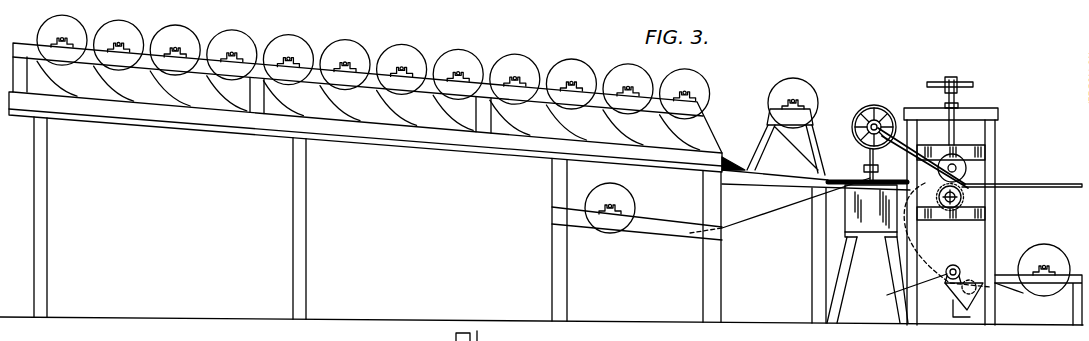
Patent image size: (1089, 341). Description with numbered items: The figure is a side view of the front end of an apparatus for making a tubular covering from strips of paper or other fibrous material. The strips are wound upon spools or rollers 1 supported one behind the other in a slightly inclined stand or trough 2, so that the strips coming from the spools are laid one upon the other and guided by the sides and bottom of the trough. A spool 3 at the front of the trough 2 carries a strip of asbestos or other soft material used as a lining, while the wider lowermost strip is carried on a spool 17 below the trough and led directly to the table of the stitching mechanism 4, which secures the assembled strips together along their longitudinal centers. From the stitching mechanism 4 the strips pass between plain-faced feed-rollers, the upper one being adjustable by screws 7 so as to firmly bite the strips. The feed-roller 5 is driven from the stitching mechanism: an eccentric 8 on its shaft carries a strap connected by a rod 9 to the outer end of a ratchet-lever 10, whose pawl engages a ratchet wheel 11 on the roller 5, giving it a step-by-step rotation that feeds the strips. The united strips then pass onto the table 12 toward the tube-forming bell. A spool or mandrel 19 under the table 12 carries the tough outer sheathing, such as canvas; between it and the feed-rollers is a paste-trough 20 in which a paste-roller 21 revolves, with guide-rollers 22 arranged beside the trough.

The spools or rollers 1 is at (70, 34).
The stand or trough 2 is at (541, 184).
The spool 3 is at (800, 96).
The stitching or sewing mechanism 4 is at (966, 166).
The feed-roller 5 is at (943, 214).
The screws 7 is at (955, 132).
The eccentric 8 is at (878, 118).
The rod 9 is at (882, 142).
The ratchet-lever 10 is at (962, 190).
The ratchet face or wheel 11 is at (947, 213).
The table 12 is at (1061, 188).
The spool or roller for the lowermost strip 17 is at (625, 201).
The spool or mandrel 19 is at (1045, 254).
The paste-trough 20 is at (950, 292).
The paste-roller 21 is at (969, 283).
The guide-rollers 22 is at (872, 240).